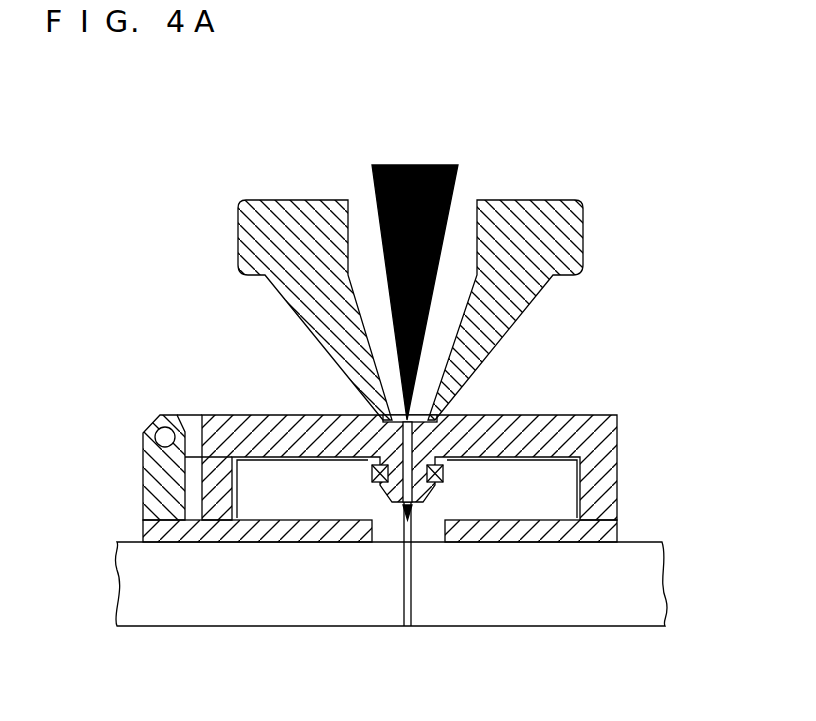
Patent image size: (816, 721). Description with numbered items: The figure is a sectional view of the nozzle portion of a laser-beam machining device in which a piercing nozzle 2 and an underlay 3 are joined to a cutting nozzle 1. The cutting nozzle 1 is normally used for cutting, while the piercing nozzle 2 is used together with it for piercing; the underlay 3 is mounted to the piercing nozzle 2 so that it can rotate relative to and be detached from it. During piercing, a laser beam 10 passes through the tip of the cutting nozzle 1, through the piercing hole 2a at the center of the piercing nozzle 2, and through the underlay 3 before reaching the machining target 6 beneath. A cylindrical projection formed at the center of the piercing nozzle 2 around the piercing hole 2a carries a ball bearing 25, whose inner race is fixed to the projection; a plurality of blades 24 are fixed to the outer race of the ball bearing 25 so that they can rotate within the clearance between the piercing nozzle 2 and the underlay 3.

The cutting nozzle 1 is at (553, 230).
The laser beam 10 is at (455, 180).
The piercing nozzle 2 is at (461, 425).
The piercing hole 2a is at (413, 447).
The blades 24 is at (552, 488).
The ball bearing 25 is at (373, 464).
The underlay 3 is at (588, 530).
The machining target 6 is at (157, 597).